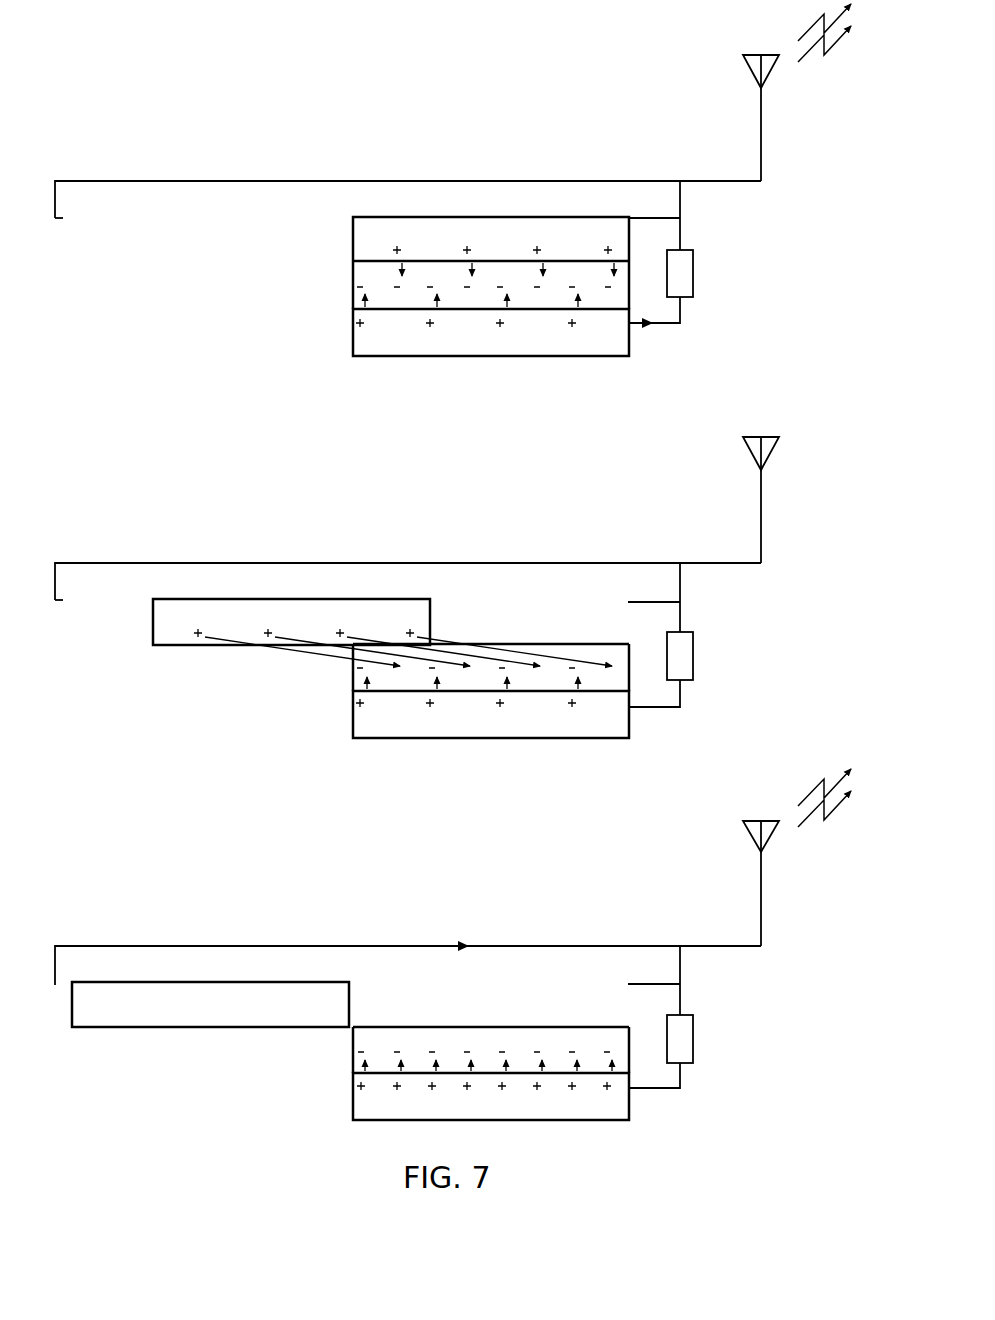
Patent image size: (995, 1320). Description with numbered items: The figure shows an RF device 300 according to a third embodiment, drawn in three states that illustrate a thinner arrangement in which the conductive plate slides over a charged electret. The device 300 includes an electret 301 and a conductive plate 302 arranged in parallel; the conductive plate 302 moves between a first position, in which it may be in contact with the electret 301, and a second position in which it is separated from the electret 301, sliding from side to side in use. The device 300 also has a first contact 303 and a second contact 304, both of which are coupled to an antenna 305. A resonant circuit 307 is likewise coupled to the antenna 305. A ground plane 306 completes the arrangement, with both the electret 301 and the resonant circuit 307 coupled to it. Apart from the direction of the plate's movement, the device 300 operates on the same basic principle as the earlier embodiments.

The RF device 300 is at (210, 68).
The electret 301 is at (352, 278).
The conductive plate 302 is at (352, 227).
The first contact 303 is at (650, 216).
The second contact 304 is at (63, 218).
The antenna 305 is at (761, 125).
The ground plane 306 is at (352, 330).
The resonant circuit 307 is at (693, 275).